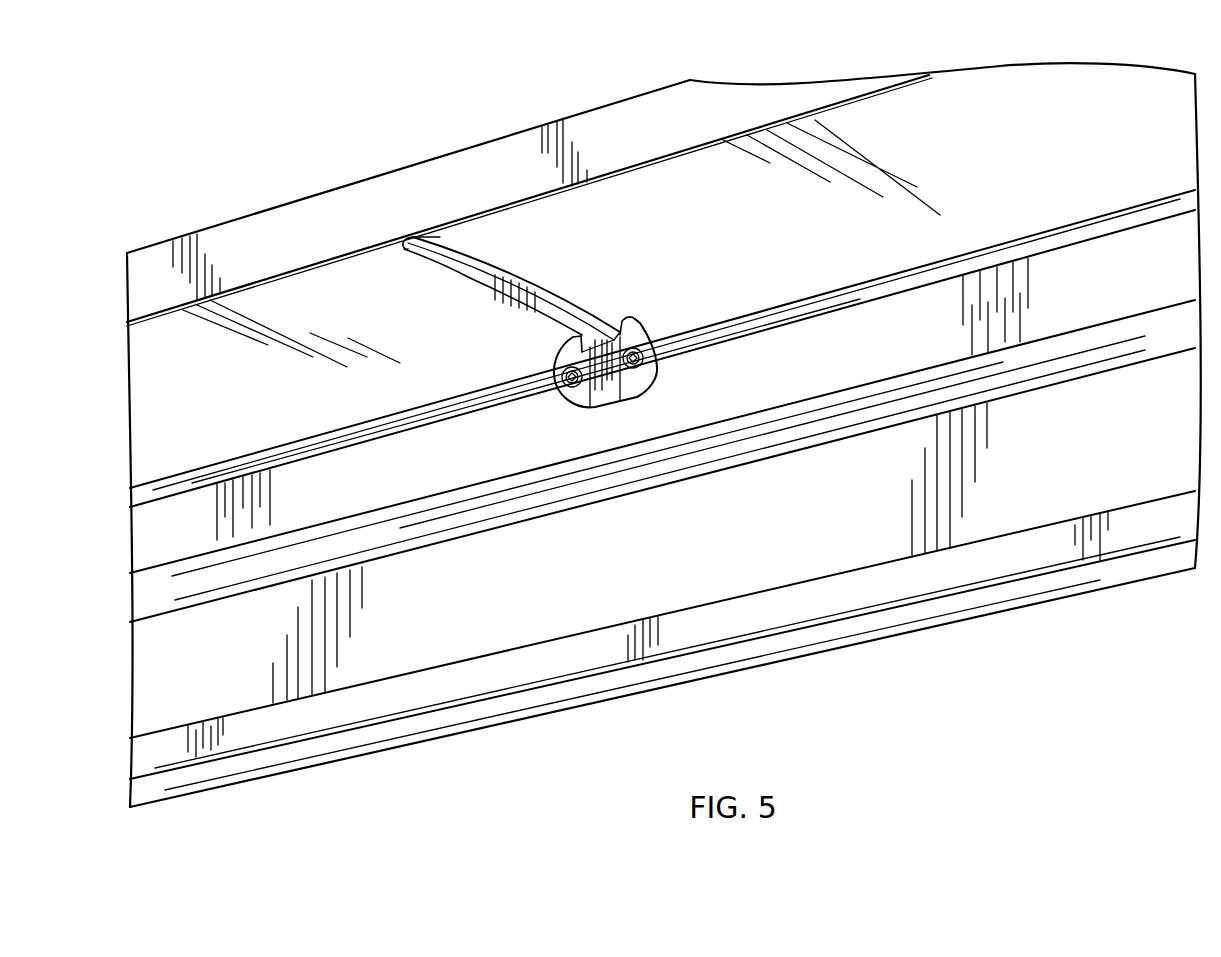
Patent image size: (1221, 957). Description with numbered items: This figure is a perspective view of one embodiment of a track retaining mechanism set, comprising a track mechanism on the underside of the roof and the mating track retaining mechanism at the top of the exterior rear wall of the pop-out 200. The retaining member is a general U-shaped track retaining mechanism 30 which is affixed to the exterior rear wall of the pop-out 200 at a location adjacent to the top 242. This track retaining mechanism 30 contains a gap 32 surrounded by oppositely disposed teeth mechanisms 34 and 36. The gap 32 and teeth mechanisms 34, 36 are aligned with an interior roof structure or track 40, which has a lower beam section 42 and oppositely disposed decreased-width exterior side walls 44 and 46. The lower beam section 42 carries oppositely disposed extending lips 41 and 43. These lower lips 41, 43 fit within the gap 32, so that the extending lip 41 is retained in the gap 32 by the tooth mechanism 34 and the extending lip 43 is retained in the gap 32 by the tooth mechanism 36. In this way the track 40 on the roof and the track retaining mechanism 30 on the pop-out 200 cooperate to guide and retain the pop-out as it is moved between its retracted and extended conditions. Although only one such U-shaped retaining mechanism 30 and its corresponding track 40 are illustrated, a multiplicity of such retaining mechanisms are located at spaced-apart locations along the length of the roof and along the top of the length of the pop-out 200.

The pop-out 200 is at (447, 617).
The top 242 is at (692, 344).
The track retaining mechanism 30 is at (568, 386).
The gap 32 is at (595, 392).
The tooth mechanism 34 is at (630, 323).
The tooth mechanism 36 is at (567, 352).
The track 40 is at (545, 290).
The extending lip 41 is at (608, 333).
The lower beam section 42 is at (425, 256).
The extending lip 43 is at (488, 282).
The exterior side wall 44 is at (459, 238).
The exterior side wall 46 is at (409, 241).